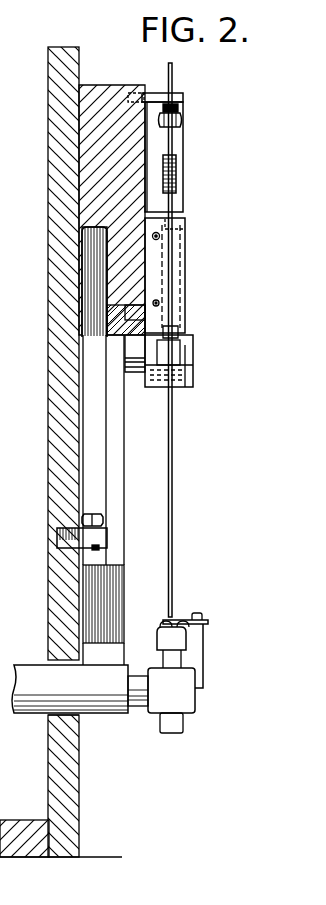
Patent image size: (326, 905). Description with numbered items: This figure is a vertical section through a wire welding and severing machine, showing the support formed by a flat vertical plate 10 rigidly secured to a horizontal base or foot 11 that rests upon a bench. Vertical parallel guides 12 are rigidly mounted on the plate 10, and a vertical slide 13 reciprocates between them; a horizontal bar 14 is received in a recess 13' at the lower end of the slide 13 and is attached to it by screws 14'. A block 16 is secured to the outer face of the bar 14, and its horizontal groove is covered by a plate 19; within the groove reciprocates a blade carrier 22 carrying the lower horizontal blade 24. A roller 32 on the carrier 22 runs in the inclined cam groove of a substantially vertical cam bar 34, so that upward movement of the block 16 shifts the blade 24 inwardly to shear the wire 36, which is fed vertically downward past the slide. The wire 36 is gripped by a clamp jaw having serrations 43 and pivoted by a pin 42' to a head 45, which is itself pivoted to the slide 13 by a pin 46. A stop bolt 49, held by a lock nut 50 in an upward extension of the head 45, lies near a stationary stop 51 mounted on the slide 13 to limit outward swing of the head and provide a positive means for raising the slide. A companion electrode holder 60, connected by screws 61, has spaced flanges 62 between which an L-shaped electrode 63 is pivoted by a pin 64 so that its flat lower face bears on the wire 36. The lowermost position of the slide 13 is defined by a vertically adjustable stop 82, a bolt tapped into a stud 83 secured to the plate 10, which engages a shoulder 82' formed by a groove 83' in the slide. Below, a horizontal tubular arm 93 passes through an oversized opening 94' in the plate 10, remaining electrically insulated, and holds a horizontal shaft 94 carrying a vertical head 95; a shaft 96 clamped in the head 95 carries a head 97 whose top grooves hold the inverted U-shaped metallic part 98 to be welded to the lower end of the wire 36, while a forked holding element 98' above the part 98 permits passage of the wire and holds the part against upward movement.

The vertical plate 10 is at (47, 80).
The horizontal base 11 is at (9, 820).
The vertical guides 12 is at (124, 456).
The vertical slide 13 is at (80, 210).
The recess 13' is at (79, 285).
The horizontal bar 14 is at (69, 282).
The screws 14' is at (79, 317).
The block 16 is at (156, 387).
The plates 19 is at (195, 363).
The blade carrier 22 is at (181, 352).
The lower horizontal blade 24 is at (150, 375).
The roller 32 is at (123, 373).
The cam bar 34 is at (128, 610).
The wire 36 is at (176, 80).
The pin 42' is at (201, 174).
The serrations 43 is at (172, 190).
The head 45 is at (186, 152).
The pin 46 is at (145, 143).
The stop bolt 49 is at (183, 108).
The lock nut 50 is at (185, 118).
The stationary stop 51 is at (155, 92).
The companion electrode holder 60 is at (186, 282).
The screws 61 is at (159, 237).
The flanges 62 is at (180, 262).
The L-shaped electrode 63 is at (186, 336).
The pin 64 is at (190, 222).
The adjustable stop 82 is at (123, 522).
The shoulder 82' is at (48, 234).
The stud 83 is at (60, 542).
The groove 83' is at (48, 274).
The tubular arm 93 is at (102, 714).
The shaft 94 is at (141, 712).
The opening 94' is at (43, 732).
The vertical head 95 is at (186, 703).
The shaft 96 is at (165, 658).
The head 97 is at (188, 642).
The inverted U-shaped metallic part 98 is at (169, 633).
The forked holding element 98' is at (210, 634).